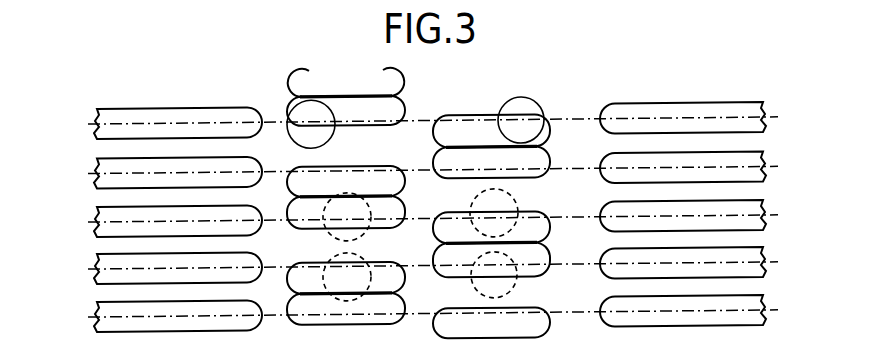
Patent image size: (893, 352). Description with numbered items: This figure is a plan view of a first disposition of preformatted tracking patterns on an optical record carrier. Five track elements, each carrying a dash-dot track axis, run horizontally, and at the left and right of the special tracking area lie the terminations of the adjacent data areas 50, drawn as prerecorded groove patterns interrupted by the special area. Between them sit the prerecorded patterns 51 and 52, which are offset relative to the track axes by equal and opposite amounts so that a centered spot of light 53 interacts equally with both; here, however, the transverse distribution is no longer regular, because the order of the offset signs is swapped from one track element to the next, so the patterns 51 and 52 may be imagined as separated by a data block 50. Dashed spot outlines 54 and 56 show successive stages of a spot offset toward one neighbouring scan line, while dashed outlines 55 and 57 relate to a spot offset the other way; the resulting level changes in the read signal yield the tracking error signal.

The termination of data area 50 is at (163, 110).
The prerecorded pattern 51 is at (405, 114).
The prerecorded pattern 52 is at (550, 134).
The spot of light 53 is at (334, 137).
The spot outline 54 is at (332, 239).
The spot outline 55 is at (362, 262).
The spot outline 56 is at (516, 208).
The spot outline 57 is at (514, 292).